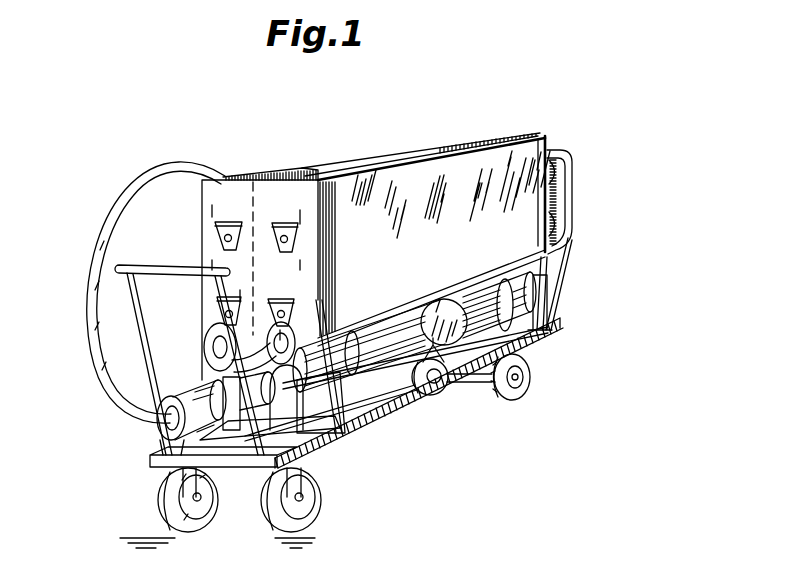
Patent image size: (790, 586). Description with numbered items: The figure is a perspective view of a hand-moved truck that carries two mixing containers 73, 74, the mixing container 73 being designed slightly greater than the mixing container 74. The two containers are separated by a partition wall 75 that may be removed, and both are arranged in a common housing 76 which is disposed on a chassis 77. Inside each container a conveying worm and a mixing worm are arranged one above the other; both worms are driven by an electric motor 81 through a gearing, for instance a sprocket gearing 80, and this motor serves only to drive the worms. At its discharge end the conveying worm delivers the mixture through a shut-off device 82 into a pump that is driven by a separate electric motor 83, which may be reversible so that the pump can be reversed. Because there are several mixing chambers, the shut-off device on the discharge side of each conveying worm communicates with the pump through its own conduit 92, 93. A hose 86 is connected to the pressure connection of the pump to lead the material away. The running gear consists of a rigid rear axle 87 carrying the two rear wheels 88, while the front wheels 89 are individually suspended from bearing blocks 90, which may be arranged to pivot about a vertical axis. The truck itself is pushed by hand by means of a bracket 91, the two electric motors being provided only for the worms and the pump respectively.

The mixing container 73 is at (303, 168).
The mixing container 74 is at (231, 176).
The partition wall 75 is at (281, 176).
The common housing 76 is at (547, 143).
The chassis 77 is at (394, 412).
The sprocket gearing 80 is at (556, 207).
The electric motor 81 is at (507, 322).
The shut-off device 82 is at (207, 327).
The electric motor 83 is at (350, 332).
The hose 86 is at (116, 404).
The rear axle 87 is at (473, 380).
The rear wheels 88 is at (518, 394).
The front wheels 89 is at (287, 518).
The bearing blocks 90 is at (310, 482).
The bracket 91 is at (163, 266).
The conduit 92 is at (205, 348).
The conduit 93 is at (262, 316).